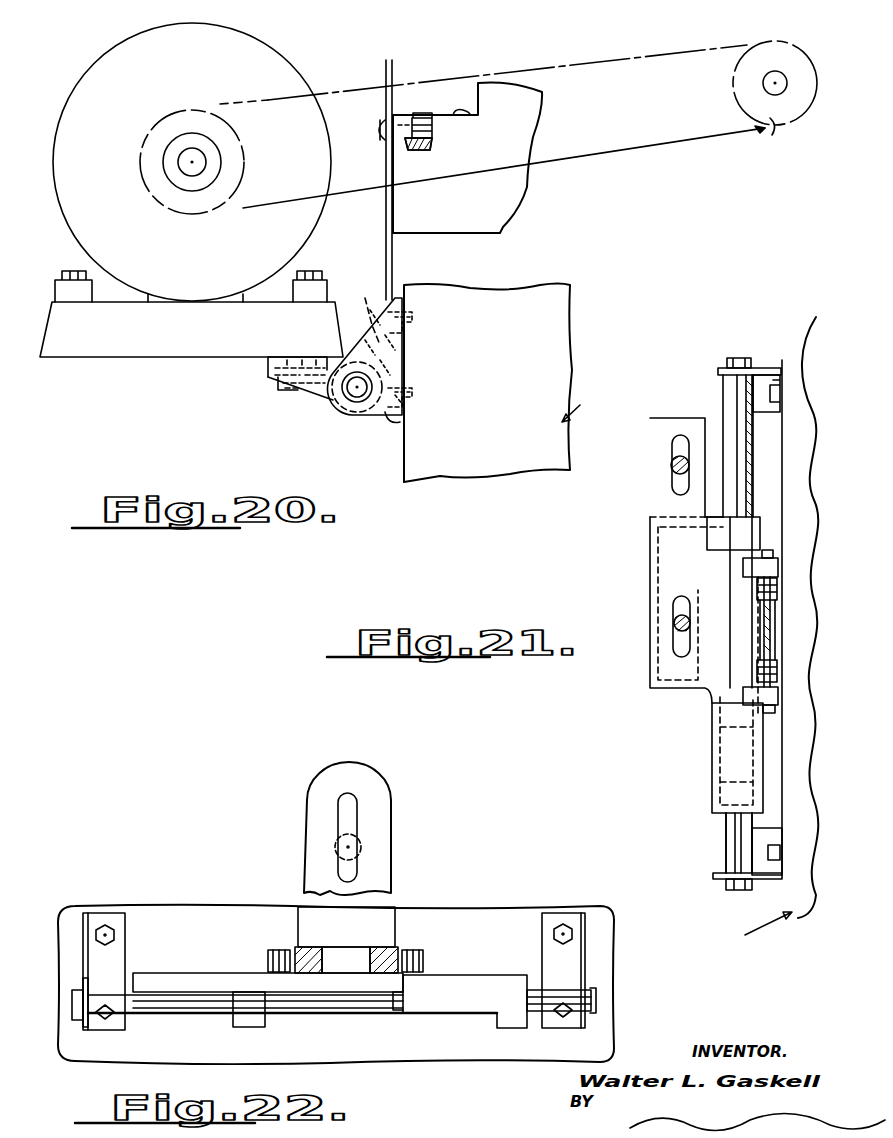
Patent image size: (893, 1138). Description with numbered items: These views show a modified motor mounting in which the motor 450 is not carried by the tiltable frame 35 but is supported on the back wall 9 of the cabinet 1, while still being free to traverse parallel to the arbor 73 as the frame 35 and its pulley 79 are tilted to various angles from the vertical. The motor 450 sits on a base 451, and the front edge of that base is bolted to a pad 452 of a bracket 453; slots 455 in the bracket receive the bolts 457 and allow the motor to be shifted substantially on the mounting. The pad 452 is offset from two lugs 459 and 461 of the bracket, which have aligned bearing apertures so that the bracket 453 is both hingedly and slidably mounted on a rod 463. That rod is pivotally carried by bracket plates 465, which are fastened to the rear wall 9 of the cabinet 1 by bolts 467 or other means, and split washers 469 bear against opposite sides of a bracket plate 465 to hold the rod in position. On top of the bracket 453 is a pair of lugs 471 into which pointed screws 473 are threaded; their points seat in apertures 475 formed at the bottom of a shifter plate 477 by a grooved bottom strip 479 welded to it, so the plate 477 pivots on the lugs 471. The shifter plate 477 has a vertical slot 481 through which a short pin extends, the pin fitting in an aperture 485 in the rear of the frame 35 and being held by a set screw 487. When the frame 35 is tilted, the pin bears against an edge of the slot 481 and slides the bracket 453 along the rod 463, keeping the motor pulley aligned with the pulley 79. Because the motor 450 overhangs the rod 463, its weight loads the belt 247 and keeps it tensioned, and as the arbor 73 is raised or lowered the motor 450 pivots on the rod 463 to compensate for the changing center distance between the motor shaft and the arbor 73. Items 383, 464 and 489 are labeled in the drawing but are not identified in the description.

In FIG. 20, the cabinet 1 is at (571, 410).
In FIG. 21, the cabinet 1 is at (760, 930).
In FIG. 20, the back wall 9 is at (405, 452).
In FIG. 21, the back wall 9 is at (782, 890).
In FIG. 22, the back wall 9 is at (630, 1010).
In FIG. 20, the frame 35 is at (492, 228).
In FIG. 20, the arbor 73 is at (773, 85).
In FIG. 20, the pulley 79 is at (773, 140).
In FIG. 20, the belt 247 is at (640, 155).
In FIG. 20, the guard bracket 383 is at (465, 117).
In FIG. 20, the motor 450 is at (272, 52).
In FIG. 20, the base 451 is at (130, 336).
In FIG. 20, the pad 452 is at (278, 355).
In FIG. 21, the pad 452 is at (650, 588).
In FIG. 22, the pad 452 is at (190, 973).
In FIG. 20, the bracket 453 is at (322, 398).
In FIG. 21, the bracket 453 is at (683, 417).
In FIG. 22, the bracket 453 is at (185, 992).
In FIG. 21, the slots 455 is at (672, 482).
In FIG. 21, the bolts 457 is at (672, 465).
In FIG. 21, the lug 459 is at (755, 530).
In FIG. 22, the lug 459 is at (258, 1027).
In FIG. 21, the lug 461 is at (718, 798).
In FIG. 22, the lug 461 is at (467, 1007).
In FIG. 20, the rod 463 is at (355, 397).
In FIG. 21, the rod 463 is at (735, 843).
In FIG. 22, the rod 463 is at (600, 1001).
In FIG. 22, the bolt head 464 is at (88, 1000).
In FIG. 20, the bracket plates 465 is at (400, 422).
In FIG. 21, the bracket plates 465 is at (765, 368).
In FIG. 22, the bracket plates 465 is at (86, 985).
In FIG. 20, the bolts 467 is at (450, 380).
In FIG. 21, the bolts 467 is at (776, 400).
In FIG. 22, the bolts 467 is at (108, 925).
In FIG. 21, the split washers 469 is at (720, 372).
In FIG. 21, the lugs 471 is at (743, 568).
In FIG. 22, the lugs 471 is at (285, 947).
In FIG. 21, the pointed screws 473 is at (770, 548).
In FIG. 22, the pointed screws 473 is at (268, 960).
In FIG. 22, the apertures 475 is at (300, 973).
In FIG. 20, the shifter plate 477 is at (385, 248).
In FIG. 21, the shifter plate 477 is at (774, 630).
In FIG. 22, the shifter plate 477 is at (382, 835).
In FIG. 20, the grooved bottom strip 479 is at (362, 312).
In FIG. 21, the grooved bottom strip 479 is at (772, 612).
In FIG. 22, the grooved bottom strip 479 is at (362, 932).
In FIG. 22, the vertical slot 481 is at (352, 810).
In FIG. 20, the aperture 485 is at (383, 135).
In FIG. 20, the set screw 487 is at (425, 115).
In FIG. 20, the nut 489 is at (418, 150).